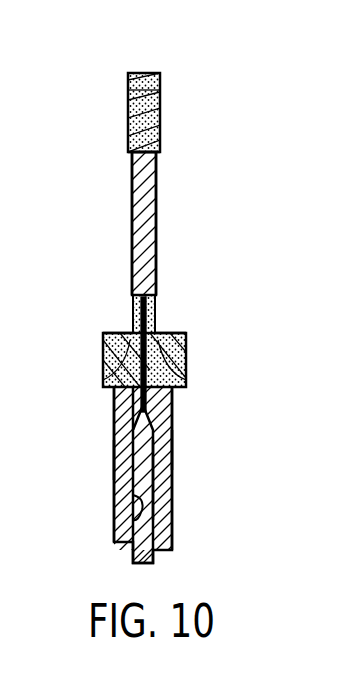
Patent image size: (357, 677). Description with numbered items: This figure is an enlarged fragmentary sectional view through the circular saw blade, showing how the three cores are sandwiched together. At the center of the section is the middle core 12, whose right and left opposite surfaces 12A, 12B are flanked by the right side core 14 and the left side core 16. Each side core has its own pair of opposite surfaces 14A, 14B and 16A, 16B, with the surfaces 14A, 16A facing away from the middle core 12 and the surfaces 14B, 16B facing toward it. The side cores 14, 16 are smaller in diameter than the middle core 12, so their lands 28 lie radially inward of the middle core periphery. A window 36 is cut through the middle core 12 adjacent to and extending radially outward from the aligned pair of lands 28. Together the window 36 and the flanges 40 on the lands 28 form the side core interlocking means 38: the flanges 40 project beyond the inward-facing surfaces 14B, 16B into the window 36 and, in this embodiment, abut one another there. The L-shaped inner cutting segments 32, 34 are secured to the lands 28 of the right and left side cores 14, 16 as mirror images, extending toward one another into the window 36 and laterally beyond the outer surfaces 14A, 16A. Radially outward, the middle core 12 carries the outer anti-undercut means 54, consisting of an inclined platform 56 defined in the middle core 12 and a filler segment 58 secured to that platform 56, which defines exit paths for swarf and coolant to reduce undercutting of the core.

The outer anti-undercut means 54 is at (118, 72).
The filler segment 58 is at (128, 110).
The platform 56 is at (156, 167).
The middle core 12 is at (157, 250).
The right opposite surface of the middle core 12A is at (156, 205).
The left opposite surface of the middle core 12B is at (132, 203).
The window 36 is at (133, 315).
The inner cutting segment on the left side core 34 is at (103, 335).
The inner cutting segment on the right side core 32 is at (186, 340).
The land 28 is at (105, 370).
The side core interlocking means 38 is at (188, 415).
The flange 40 is at (134, 402).
The right side core 14 is at (173, 519).
The outer surface of the right side core 14A is at (172, 448).
The inner surface of the right side core 14B is at (158, 486).
The left side core 16 is at (113, 529).
The outer surface of the left side core 16A is at (114, 460).
The inner surface of the left side core 16B is at (133, 518).